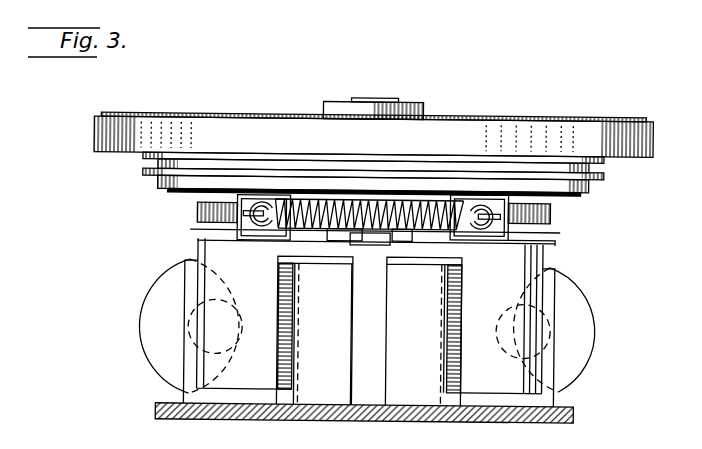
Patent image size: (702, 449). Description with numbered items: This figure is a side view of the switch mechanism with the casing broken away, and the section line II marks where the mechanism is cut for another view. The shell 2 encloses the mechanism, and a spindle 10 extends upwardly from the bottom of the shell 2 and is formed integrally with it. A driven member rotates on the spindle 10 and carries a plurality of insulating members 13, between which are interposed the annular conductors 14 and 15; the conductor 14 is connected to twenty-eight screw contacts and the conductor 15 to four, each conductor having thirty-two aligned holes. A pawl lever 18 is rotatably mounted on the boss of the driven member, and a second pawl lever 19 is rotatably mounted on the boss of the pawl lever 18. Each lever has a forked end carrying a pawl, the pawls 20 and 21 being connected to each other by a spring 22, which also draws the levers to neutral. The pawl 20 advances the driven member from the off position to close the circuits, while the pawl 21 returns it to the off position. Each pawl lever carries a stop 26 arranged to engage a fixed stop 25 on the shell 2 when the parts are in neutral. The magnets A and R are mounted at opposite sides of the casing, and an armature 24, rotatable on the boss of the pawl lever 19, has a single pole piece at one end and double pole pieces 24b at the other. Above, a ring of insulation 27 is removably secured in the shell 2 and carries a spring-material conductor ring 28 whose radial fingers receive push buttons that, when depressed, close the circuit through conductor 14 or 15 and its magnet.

The shell or casing 2 is at (578, 413).
The spindle 10 is at (388, 102).
The insulating members 13 is at (588, 168).
The annular conductor 14 is at (603, 159).
The annular conductor 15 is at (142, 175).
The pawl lever 18 is at (197, 237).
The second pawl lever 19 is at (546, 243).
The pawl 20 is at (253, 241).
The pawl 21 is at (530, 263).
The spring 22 is at (356, 216).
The armature 24 is at (338, 247).
The double pole pieces 24b is at (273, 329).
The fixed stop 25 is at (386, 246).
The stop 26 is at (200, 210).
The ring of insulation 27 is at (100, 131).
The conductor ring 28 is at (152, 115).
The magnet A is at (163, 303).
The magnet R is at (575, 309).
The section line II- II is at (152, 193).